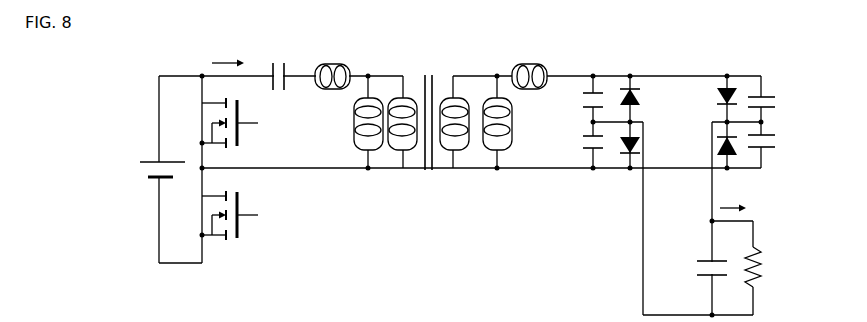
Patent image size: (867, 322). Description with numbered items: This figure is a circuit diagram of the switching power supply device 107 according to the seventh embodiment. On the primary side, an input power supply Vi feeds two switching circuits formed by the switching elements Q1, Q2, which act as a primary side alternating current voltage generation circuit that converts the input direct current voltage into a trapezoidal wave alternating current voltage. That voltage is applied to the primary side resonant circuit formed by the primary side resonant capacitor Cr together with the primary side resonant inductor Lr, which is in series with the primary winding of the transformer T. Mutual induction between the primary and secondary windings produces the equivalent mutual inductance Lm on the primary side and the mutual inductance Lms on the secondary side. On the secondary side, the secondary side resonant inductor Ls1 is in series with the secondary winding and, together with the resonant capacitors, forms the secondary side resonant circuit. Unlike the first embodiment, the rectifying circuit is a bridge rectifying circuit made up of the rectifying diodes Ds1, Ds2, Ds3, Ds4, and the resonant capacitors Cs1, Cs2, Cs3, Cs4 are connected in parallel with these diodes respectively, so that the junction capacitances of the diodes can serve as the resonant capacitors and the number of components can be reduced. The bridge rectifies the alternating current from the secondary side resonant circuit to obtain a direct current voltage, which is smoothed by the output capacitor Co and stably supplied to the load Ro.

The switching power supply device 107 is at (790, 23).
The input power supply Vi is at (155, 153).
The switching element Q1 is at (239, 215).
The switching element Q2 is at (239, 123).
The primary side resonant capacitor Cr is at (277, 64).
The primary side resonant inductor Lr is at (332, 64).
The equivalent mutual inductance Lm is at (354, 122).
The transformer T is at (427, 112).
The secondary side mutual inductance Lms is at (511, 122).
The secondary side resonant inductor Ls1 is at (529, 64).
The resonant capacitor Cs4 is at (575, 103).
The resonant capacitor Cs3 is at (575, 144).
The rectifying diode Ds4 is at (645, 101).
The rectifying diode Ds3 is at (645, 146).
The rectifying diode Ds1 is at (708, 100).
The rectifying diode Ds2 is at (708, 146).
The secondary side resonant capacitor Cs1 is at (776, 104).
The secondary side resonant capacitor Cs2 is at (776, 146).
The output capacitor Co is at (704, 255).
The load Ro is at (742, 268).